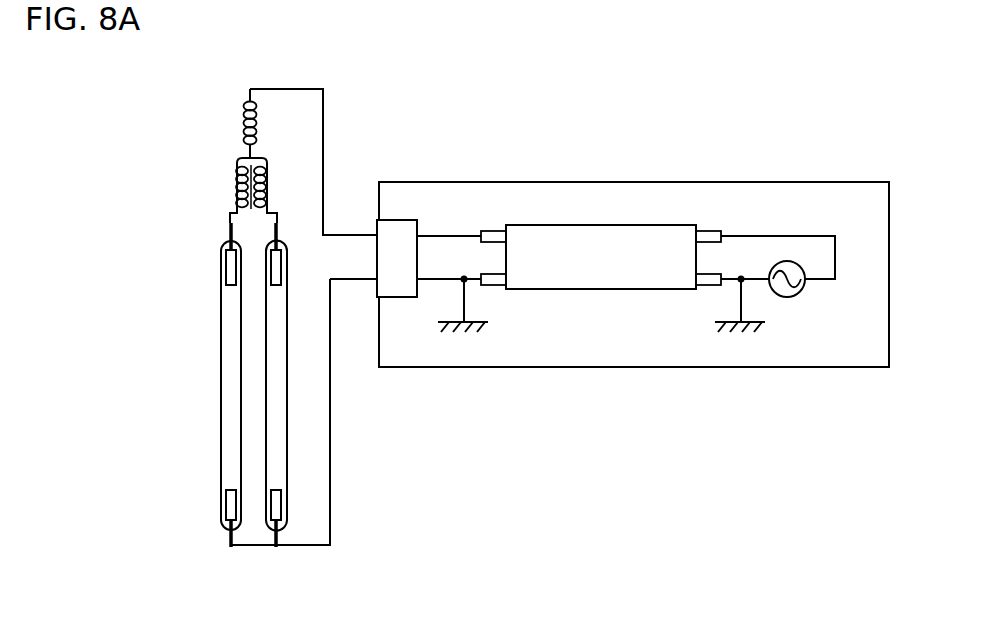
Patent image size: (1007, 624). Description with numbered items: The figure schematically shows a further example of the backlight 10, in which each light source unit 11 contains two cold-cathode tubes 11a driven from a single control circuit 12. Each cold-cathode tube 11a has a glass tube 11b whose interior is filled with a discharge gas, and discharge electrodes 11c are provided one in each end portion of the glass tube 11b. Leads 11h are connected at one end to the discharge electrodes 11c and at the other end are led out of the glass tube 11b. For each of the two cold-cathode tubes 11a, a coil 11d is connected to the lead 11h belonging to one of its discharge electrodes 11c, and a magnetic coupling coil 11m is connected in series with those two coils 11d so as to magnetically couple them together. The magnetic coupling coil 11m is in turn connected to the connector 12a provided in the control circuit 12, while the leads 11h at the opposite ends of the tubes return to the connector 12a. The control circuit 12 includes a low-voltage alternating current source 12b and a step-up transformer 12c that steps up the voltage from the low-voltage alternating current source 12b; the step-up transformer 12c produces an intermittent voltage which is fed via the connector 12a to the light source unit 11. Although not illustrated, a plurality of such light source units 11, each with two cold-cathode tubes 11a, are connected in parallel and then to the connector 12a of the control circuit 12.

The backlight 10 is at (401, 108).
The light source unit 11 is at (353, 521).
The cold-cathode tube 11a is at (297, 341).
The glass tube 11b is at (221, 375).
The discharge electrode 11c is at (228, 272).
The coil 11d is at (237, 190).
The lead 11h is at (228, 232).
The magnetic coupling coil 11m is at (244, 128).
The control circuit 12 is at (663, 182).
The connector 12a is at (378, 228).
The low-voltage alternating current source 12b is at (800, 291).
The step-up transformer 12c is at (530, 225).